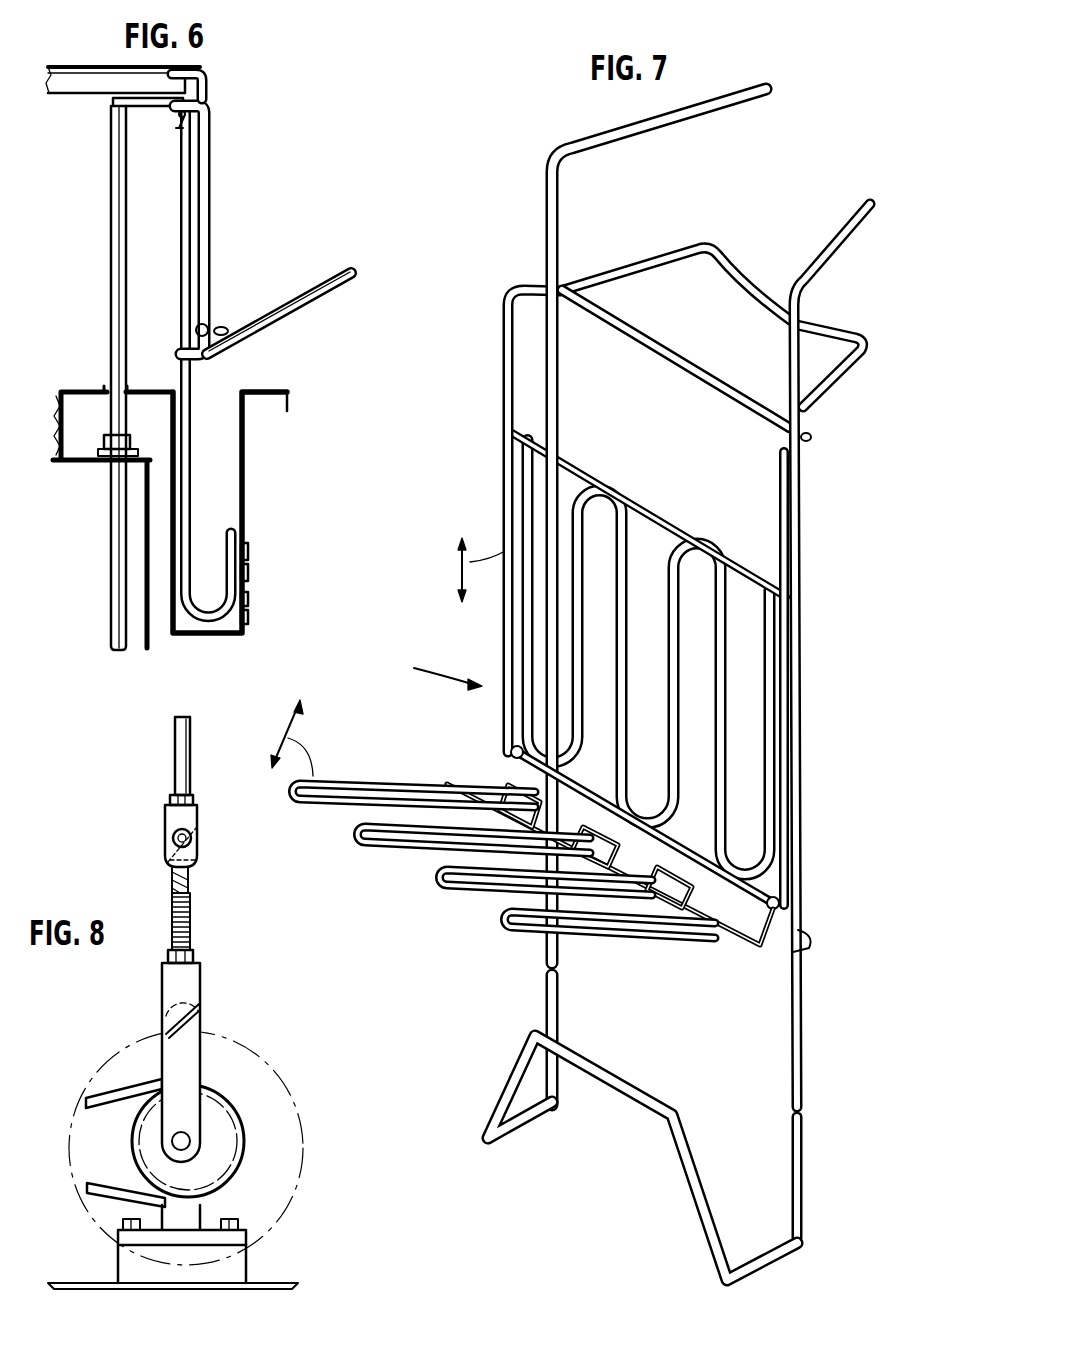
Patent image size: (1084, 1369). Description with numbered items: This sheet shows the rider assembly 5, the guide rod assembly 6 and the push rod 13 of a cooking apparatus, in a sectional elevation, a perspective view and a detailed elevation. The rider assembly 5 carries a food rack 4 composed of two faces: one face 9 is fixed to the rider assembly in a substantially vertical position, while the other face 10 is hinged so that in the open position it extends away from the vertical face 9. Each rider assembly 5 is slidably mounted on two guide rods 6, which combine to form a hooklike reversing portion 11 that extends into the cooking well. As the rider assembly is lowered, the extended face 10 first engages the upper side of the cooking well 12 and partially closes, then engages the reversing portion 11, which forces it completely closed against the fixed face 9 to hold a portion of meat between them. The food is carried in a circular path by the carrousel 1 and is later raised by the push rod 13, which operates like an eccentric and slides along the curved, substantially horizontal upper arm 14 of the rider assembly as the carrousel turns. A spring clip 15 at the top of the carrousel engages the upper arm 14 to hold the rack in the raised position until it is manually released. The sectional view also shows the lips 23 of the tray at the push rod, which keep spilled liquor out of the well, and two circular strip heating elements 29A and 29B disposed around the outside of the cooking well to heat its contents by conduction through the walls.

In FIG. 6, the carrousel 1 is at (207, 81).
In FIG. 7, the food rack 4 is at (389, 657).
In FIG. 7, the rider assembly 5 is at (790, 534).
In FIG. 7, the guide rod assembly 6 is at (803, 499).
In FIG. 6, the fixed vertical face of food rack 9 is at (211, 214).
In FIG. 7, the fixed vertical face of food rack 9 is at (723, 678).
In FIG. 6, the hinged face of food rack 10 is at (332, 280).
In FIG. 7, the hinged face of food rack 10 is at (647, 942).
In FIG. 7, the hooklike reversing portion 11 is at (690, 1147).
In FIG. 6, the upper side of cooking well 12 is at (239, 422).
In FIG. 6, the push rod 13 is at (111, 212).
In FIG. 8, the push rod 13 is at (192, 742).
In FIG. 6, the upper horizontal arm of rider assembly 14 is at (113, 101).
In FIG. 7, the upper horizontal arm of rider assembly 14 is at (728, 259).
In FIG. 6, the spring clip 15 is at (184, 125).
In FIG. 6, the lips 23 is at (130, 387).
In FIG. 6, the strip heating element 29A is at (249, 605).
In FIG. 6, the strip heating element 29B is at (249, 568).